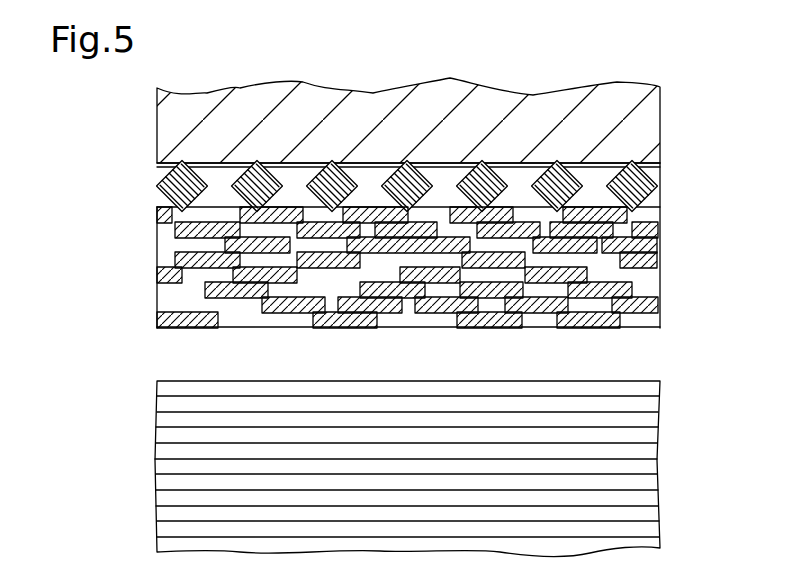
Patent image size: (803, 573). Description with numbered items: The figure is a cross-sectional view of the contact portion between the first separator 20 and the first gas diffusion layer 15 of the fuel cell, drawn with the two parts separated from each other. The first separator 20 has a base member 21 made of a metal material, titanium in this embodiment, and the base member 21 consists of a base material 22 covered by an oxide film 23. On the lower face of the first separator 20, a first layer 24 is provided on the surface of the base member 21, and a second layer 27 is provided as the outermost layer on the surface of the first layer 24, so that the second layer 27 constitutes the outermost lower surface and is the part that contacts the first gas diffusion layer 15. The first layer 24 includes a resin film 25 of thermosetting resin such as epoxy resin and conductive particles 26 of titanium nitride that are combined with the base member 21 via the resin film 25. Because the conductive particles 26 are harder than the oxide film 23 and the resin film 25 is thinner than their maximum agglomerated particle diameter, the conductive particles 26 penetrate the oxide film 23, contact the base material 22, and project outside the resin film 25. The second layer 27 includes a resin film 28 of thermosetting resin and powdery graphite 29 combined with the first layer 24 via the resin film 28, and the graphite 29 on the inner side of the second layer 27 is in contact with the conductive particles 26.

The first gas diffusion layer 15 is at (104, 471).
The first separator 20 is at (398, 203).
The base member 21 is at (455, 144).
The base material 22 is at (655, 105).
The oxide film 23 is at (431, 186).
The first layer 24 is at (455, 220).
The resin film 25 is at (655, 200).
The conductive particles 26 is at (658, 217).
The second layer 27 is at (356, 245).
The resin film 28 is at (162, 247).
The graphite 29 is at (360, 297).